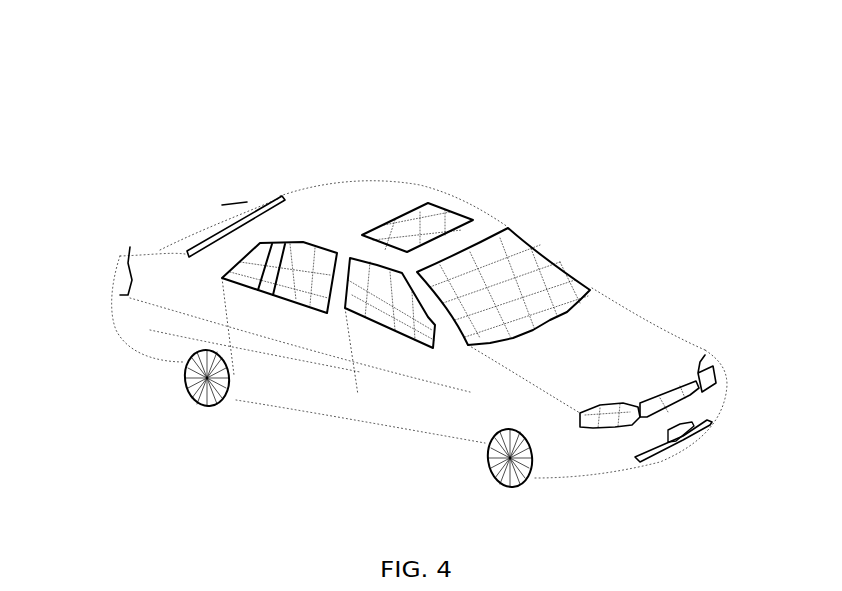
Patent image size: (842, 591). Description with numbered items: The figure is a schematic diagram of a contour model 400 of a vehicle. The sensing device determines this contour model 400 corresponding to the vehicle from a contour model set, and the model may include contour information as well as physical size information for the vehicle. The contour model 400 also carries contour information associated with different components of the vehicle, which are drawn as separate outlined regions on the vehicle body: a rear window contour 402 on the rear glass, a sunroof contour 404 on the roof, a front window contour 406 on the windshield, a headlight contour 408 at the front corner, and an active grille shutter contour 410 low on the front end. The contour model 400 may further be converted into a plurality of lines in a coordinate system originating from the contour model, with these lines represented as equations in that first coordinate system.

The contour model 400 is at (197, 38).
The rear window contour 402 is at (168, 243).
The sunroof contour 404 is at (423, 220).
The front window contour 406 is at (533, 283).
The headlight contour 408 is at (710, 368).
The active grille shutter contour 410 is at (662, 405).